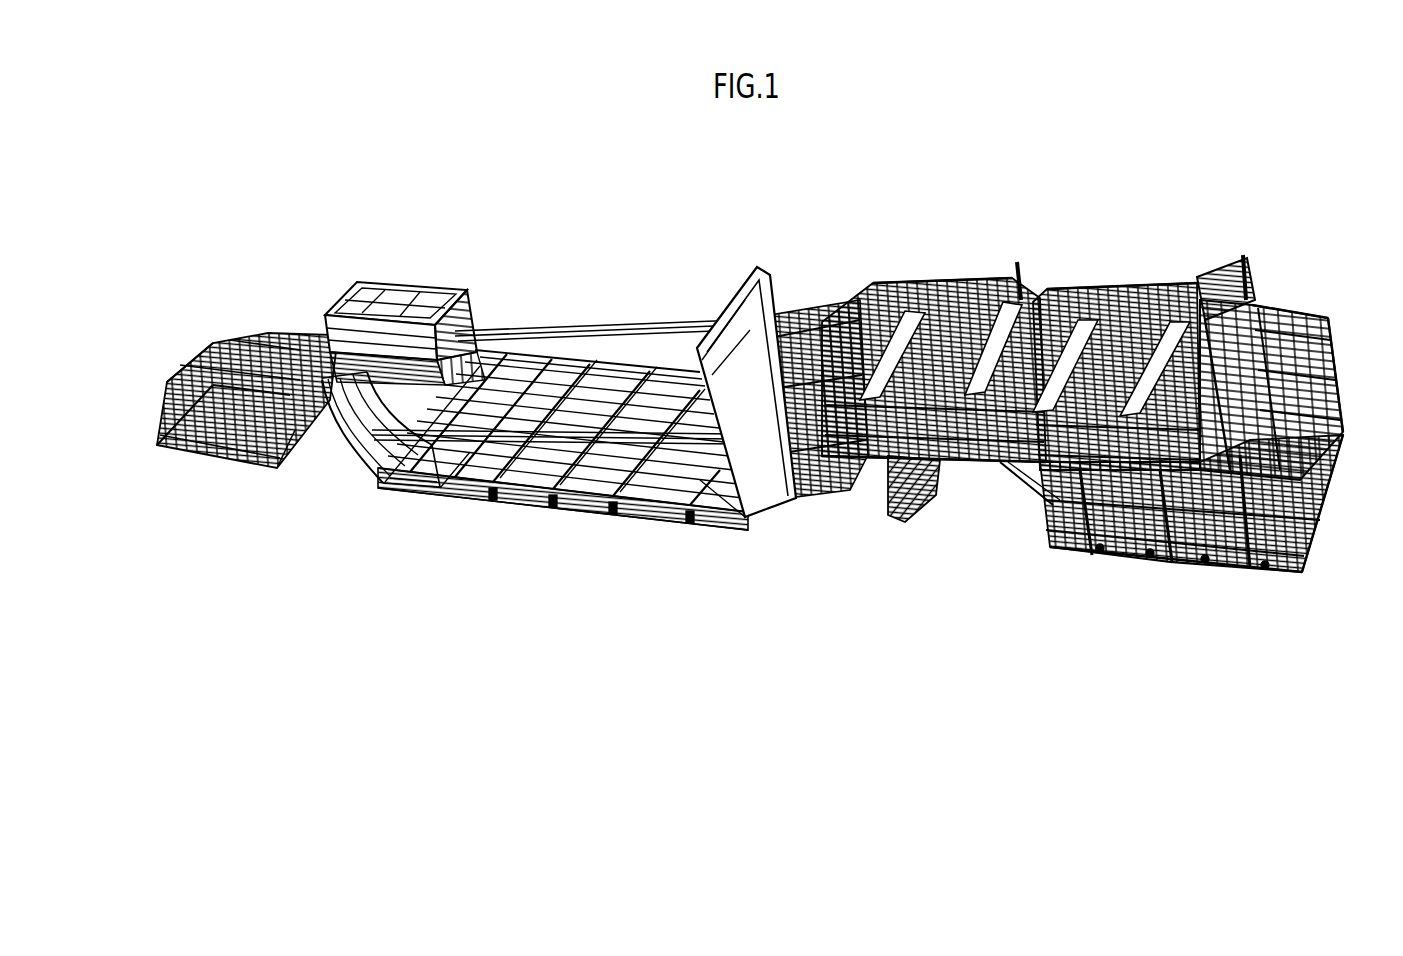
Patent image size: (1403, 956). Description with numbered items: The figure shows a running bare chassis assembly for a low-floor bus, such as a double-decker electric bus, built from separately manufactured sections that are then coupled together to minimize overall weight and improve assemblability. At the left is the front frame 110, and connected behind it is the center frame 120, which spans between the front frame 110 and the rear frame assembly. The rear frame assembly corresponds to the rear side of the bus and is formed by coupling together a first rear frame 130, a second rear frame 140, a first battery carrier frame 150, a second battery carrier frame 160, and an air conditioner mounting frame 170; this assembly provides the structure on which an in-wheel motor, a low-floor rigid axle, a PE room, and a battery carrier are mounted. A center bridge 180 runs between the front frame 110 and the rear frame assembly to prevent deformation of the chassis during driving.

The front frame 110 is at (282, 318).
The center frame 120 is at (510, 503).
The first rear frame 130 is at (890, 520).
The second rear frame 140 is at (1192, 568).
The first battery carrier frame 150 is at (962, 275).
The second battery carrier frame 160 is at (1120, 285).
The air conditioner mounting frame 170 is at (1283, 300).
The center bridge 180 is at (625, 322).